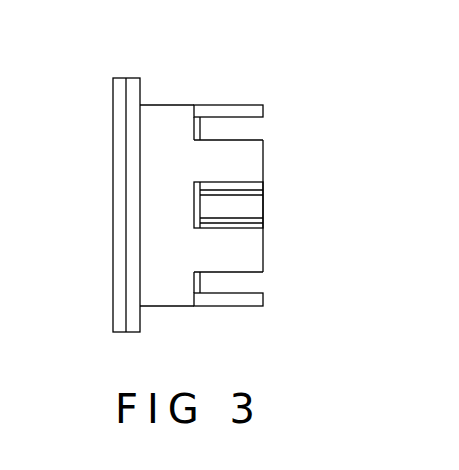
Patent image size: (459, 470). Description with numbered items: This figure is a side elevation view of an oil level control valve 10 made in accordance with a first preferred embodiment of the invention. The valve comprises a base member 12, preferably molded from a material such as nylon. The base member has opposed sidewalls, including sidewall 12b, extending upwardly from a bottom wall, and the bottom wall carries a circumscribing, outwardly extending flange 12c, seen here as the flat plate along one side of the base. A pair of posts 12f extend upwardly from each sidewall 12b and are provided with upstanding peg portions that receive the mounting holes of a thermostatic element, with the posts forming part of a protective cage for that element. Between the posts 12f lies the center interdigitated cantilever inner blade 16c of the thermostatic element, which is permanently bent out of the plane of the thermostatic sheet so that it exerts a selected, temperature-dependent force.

The oil level control valve 10 is at (105, 60).
The base member 12 is at (203, 102).
The sidewall 12b is at (168, 288).
The flange 12c is at (120, 282).
The posts 12f is at (250, 163).
The center inner blade 16c is at (248, 205).